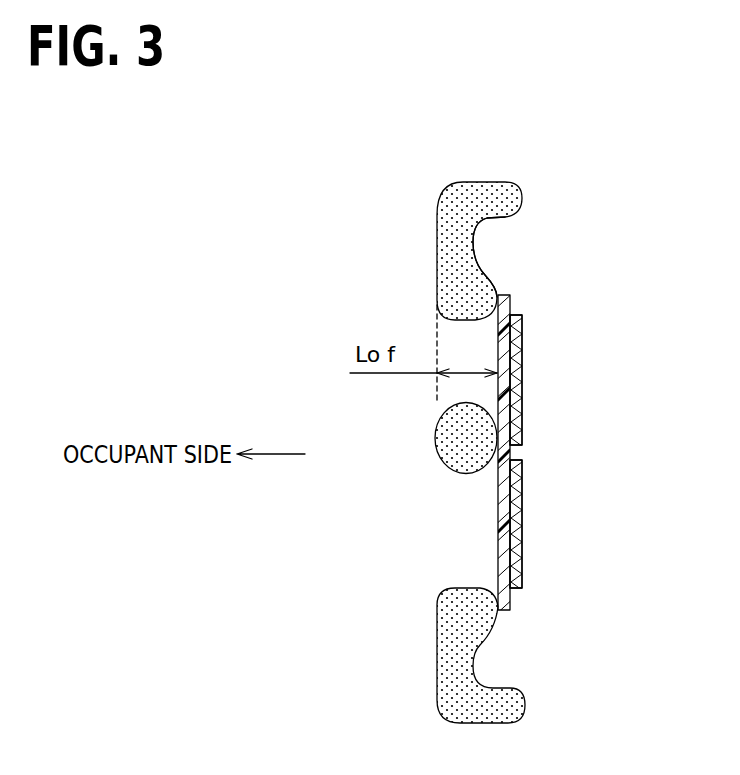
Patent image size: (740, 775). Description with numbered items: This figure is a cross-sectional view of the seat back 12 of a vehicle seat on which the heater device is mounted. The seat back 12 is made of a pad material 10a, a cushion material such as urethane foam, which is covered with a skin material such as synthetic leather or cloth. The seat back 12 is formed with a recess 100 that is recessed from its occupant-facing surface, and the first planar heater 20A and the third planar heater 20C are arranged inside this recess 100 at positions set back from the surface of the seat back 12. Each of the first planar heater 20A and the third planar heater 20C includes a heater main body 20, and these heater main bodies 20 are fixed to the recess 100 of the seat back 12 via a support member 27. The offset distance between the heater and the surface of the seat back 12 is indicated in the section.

The seat back 12 is at (449, 191).
The pad material 10a is at (478, 245).
The recess 100 is at (467, 320).
The support member 27 is at (506, 297).
The heater main body 20 is at (522, 378).
The first planar heater 20A is at (558, 358).
The third planar heater 20C is at (562, 532).